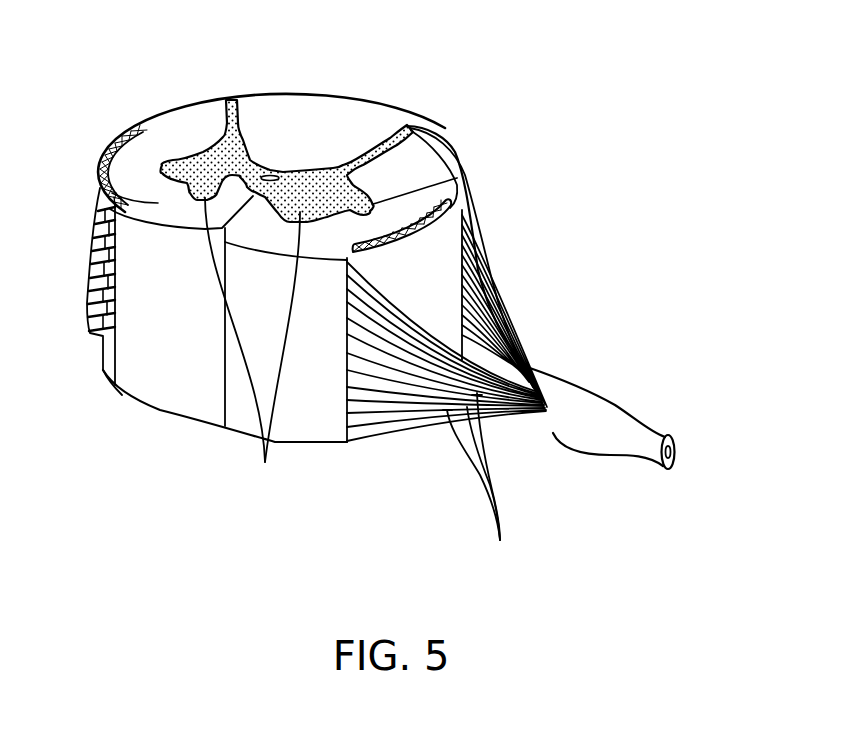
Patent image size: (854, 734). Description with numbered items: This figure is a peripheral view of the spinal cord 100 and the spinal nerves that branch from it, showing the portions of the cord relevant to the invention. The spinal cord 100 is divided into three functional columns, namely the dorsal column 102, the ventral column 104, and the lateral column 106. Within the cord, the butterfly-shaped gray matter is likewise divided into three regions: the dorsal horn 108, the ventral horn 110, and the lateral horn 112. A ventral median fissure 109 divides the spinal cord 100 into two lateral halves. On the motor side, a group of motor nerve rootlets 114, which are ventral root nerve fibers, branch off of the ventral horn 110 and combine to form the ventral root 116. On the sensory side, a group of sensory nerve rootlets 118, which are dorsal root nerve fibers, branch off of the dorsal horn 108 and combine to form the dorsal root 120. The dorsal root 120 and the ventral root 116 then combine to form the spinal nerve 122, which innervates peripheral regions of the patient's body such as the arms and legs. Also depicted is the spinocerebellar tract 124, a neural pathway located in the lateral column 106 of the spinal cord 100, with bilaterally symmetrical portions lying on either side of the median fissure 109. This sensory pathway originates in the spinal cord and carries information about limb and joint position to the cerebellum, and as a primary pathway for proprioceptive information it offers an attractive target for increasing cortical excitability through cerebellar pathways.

The spinal cord 100 is at (450, 98).
The dorsal column 102 is at (351, 112).
The ventral column 104 is at (103, 185).
The lateral column 106 is at (165, 132).
The dorsal horn 108 is at (230, 103).
The ventral median fissure 109 is at (158, 390).
The ventral horn 110 is at (265, 462).
The lateral horn 112 is at (190, 176).
The motor nerve rootlets 114 is at (446, 415).
The ventral root 116 is at (550, 413).
The sensory nerve rootlets 118 is at (493, 247).
The dorsal root 120 is at (527, 367).
The spinal nerve 122 is at (677, 453).
The spinocerebellar tract 124 is at (157, 118).